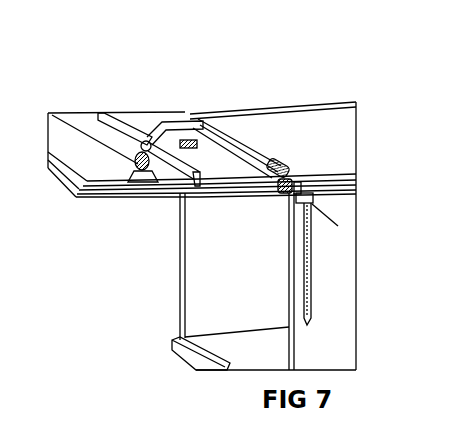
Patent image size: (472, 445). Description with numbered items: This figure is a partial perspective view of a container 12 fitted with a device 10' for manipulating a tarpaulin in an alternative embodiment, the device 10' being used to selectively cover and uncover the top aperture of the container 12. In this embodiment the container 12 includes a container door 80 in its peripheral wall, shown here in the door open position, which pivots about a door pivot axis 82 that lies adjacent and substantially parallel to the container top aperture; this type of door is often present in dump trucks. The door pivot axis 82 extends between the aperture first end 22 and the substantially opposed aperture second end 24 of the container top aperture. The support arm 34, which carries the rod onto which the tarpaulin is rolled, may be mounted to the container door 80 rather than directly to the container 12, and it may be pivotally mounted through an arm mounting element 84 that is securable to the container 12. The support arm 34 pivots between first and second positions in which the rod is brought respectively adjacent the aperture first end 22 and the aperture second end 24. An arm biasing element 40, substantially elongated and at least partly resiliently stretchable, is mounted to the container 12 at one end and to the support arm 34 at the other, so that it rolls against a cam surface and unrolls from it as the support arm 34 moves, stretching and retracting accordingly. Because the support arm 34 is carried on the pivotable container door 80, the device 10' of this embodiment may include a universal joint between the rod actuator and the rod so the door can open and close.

The device 10' is at (216, 106).
The container 12 is at (358, 221).
The aperture first end 22 is at (355, 187).
The aperture second end 24 is at (281, 105).
The support arm 34 is at (216, 156).
The arm biasing element 40 is at (137, 172).
The container door 80 is at (125, 110).
The door pivot axis 82 is at (167, 108).
The arm mounting element 84 is at (190, 147).